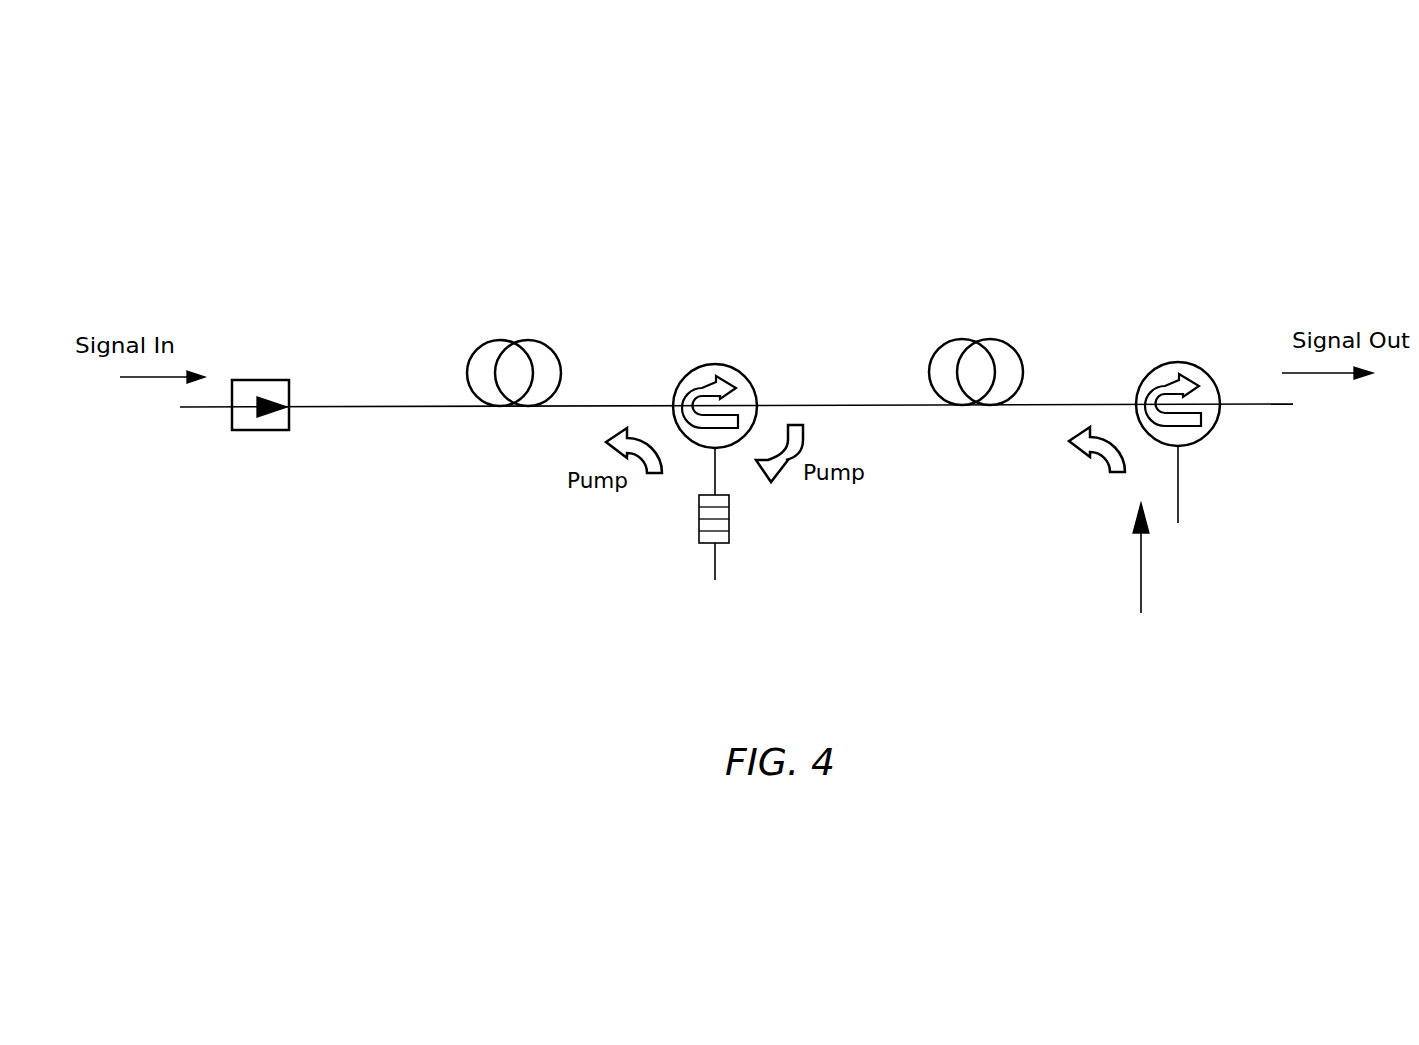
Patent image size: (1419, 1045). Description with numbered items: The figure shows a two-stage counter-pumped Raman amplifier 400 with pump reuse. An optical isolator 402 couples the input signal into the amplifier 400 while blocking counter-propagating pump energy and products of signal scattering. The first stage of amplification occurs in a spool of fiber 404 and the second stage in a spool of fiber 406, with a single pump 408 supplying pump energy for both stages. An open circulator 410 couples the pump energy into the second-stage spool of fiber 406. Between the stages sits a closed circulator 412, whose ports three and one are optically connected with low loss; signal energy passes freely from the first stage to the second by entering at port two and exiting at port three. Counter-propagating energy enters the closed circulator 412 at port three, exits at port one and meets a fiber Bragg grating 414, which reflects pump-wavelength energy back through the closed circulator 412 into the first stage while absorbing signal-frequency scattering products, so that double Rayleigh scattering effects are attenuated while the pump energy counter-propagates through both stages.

The two-stage counter-pumped Raman amplifier 400 is at (702, 225).
The optical isolator 402 is at (270, 378).
The spool of fiber 404 is at (473, 355).
The spool of fiber 406 is at (938, 350).
The pump 408 is at (1143, 566).
The open circulator 410 is at (1208, 428).
The closed circulator 412 is at (737, 368).
The fiber Bragg grating 414 is at (697, 525).